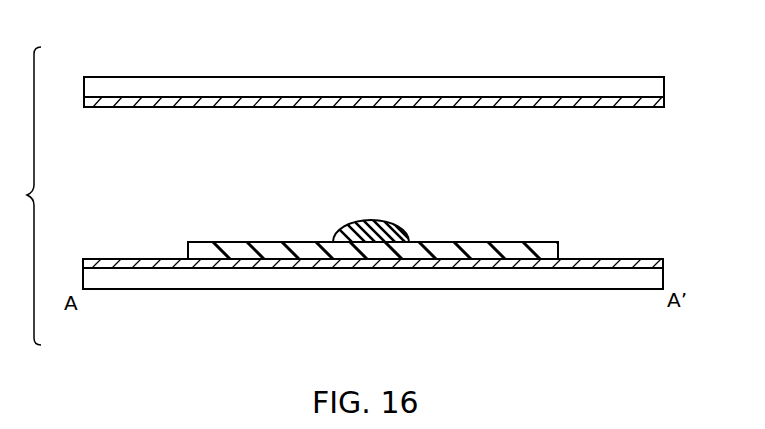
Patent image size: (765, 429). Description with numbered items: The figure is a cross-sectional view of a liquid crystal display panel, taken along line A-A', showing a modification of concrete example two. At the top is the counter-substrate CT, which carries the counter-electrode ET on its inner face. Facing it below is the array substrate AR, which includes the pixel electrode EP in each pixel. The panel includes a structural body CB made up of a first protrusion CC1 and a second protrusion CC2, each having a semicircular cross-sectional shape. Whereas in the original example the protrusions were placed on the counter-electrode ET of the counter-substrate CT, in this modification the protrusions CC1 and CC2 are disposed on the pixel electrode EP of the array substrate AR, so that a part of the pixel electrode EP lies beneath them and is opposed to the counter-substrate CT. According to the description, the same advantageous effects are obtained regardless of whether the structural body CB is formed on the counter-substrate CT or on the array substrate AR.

The counter-substrate CT is at (523, 76).
The counter-electrode ET is at (448, 101).
The array substrate AR is at (302, 290).
The pixel electrode EP is at (404, 260).
The structural body CB is at (382, 168).
The first protrusion CC1 is at (367, 220).
The second protrusion CC2 is at (256, 243).